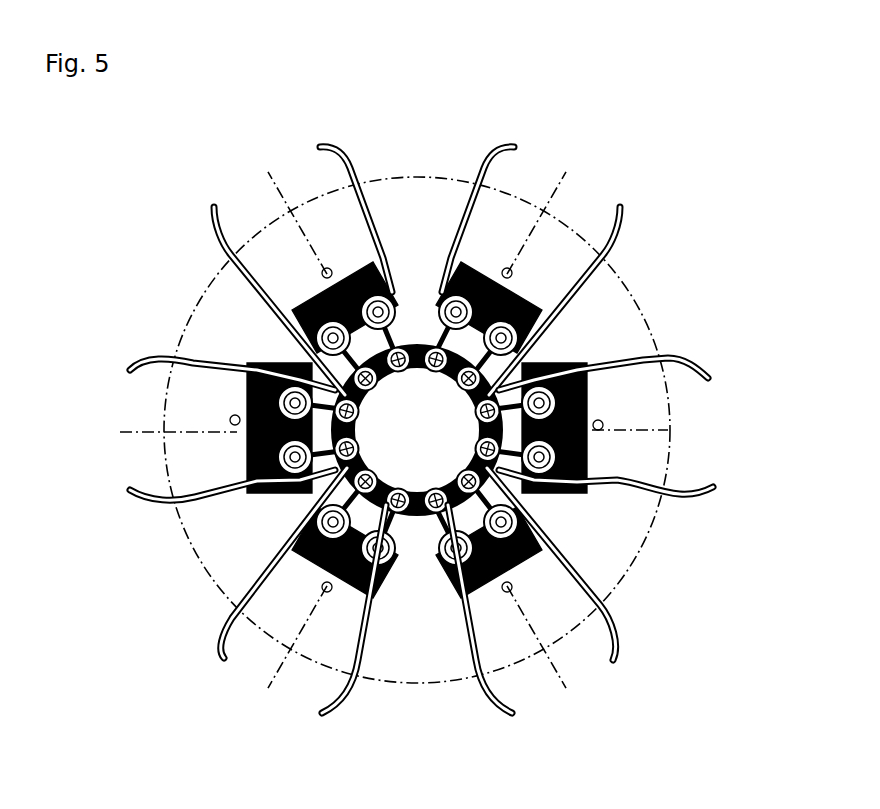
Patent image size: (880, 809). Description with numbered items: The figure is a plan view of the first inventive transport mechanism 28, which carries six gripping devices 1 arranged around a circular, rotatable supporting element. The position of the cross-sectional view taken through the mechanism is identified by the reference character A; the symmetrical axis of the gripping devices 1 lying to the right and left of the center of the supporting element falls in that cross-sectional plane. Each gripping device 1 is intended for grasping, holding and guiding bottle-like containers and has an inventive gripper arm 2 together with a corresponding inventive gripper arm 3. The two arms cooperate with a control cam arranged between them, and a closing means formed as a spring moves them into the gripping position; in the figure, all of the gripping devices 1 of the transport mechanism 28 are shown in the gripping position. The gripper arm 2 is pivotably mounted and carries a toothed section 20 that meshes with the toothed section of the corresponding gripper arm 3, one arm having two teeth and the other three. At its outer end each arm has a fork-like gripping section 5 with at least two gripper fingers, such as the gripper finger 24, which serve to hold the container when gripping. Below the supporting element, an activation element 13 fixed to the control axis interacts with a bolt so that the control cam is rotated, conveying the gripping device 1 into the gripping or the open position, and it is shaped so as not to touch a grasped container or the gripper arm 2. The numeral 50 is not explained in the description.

The gripping device 1 is at (680, 287).
The gripper arm 2 is at (597, 347).
The corresponding gripper arm 3 is at (589, 517).
The gripping section 5 is at (452, 430).
The activation element 13 is at (328, 590).
The toothed section 20 is at (467, 427).
The gripper finger 24 is at (735, 365).
The first transport mechanism 28 is at (542, 105).
The module unit 50 is at (403, 278).
The cross-section identifier A is at (705, 438).